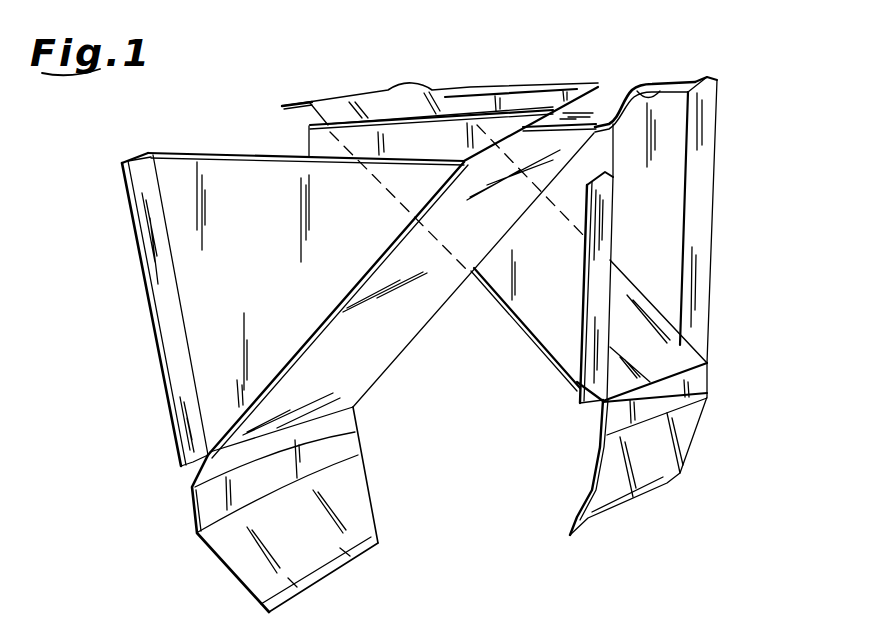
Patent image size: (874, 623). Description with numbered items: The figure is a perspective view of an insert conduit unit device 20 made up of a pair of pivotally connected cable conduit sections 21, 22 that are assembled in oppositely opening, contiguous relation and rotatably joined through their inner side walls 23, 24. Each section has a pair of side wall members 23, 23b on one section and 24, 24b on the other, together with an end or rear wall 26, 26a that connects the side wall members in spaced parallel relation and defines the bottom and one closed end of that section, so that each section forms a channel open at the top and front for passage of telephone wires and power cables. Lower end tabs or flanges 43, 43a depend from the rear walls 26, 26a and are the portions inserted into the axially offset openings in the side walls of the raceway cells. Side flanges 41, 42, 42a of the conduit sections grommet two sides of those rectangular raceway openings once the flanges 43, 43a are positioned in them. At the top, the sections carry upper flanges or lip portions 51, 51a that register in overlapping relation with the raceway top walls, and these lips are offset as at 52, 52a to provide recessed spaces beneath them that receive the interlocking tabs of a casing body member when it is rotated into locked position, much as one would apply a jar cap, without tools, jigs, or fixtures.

The insert conduit unit device 20 is at (263, 102).
The conduit section 21 is at (210, 329).
The conduit section 22 is at (653, 207).
The inner side wall 23 is at (270, 214).
The side wall member 23b is at (333, 149).
The inner side wall 24 is at (444, 154).
The side wall member 24b is at (531, 101).
The rear wall 26 is at (412, 319).
The rear wall 26a is at (437, 112).
The side flange 41 is at (152, 243).
The side flange 42 is at (601, 228).
The side flange 42a is at (700, 245).
The lower end flange 43 is at (349, 497).
The lower end flange 43a is at (668, 442).
The upper flange or lip portion 51 is at (602, 106).
The upper flange or lip portion 51a is at (291, 102).
The offset portion 52 is at (655, 85).
The offset portion 52a is at (350, 92).